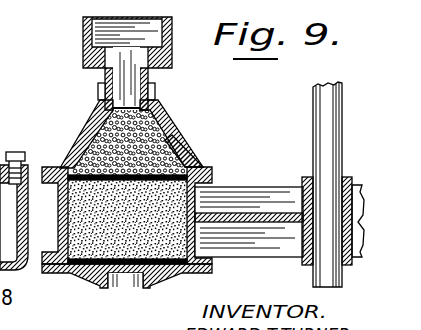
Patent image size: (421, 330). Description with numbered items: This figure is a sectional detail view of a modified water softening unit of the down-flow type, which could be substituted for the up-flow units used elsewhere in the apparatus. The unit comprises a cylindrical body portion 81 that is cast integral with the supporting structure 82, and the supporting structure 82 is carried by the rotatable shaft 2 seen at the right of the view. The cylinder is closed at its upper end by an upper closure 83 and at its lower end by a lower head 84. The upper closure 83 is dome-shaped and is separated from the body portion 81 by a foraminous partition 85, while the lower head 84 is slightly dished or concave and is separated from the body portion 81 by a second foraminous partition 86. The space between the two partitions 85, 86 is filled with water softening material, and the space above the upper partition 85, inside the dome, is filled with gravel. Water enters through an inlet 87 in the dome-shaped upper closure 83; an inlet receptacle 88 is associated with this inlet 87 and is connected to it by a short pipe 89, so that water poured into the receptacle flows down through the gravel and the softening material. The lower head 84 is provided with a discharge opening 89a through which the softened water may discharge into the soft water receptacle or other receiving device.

The inlet receptacle 88 is at (168, 33).
The short pipe 89 is at (148, 78).
The inlet 87 is at (156, 100).
The upper closure 83 is at (182, 135).
The foraminous partition 85 is at (188, 152).
The cylindrical body portion 81 is at (57, 226).
The lower head 84 is at (165, 273).
The foraminous partition 86 is at (93, 275).
The discharge opening 89a is at (133, 282).
The supporting structure 82 is at (256, 195).
The rotatable shaft 2 is at (323, 115).